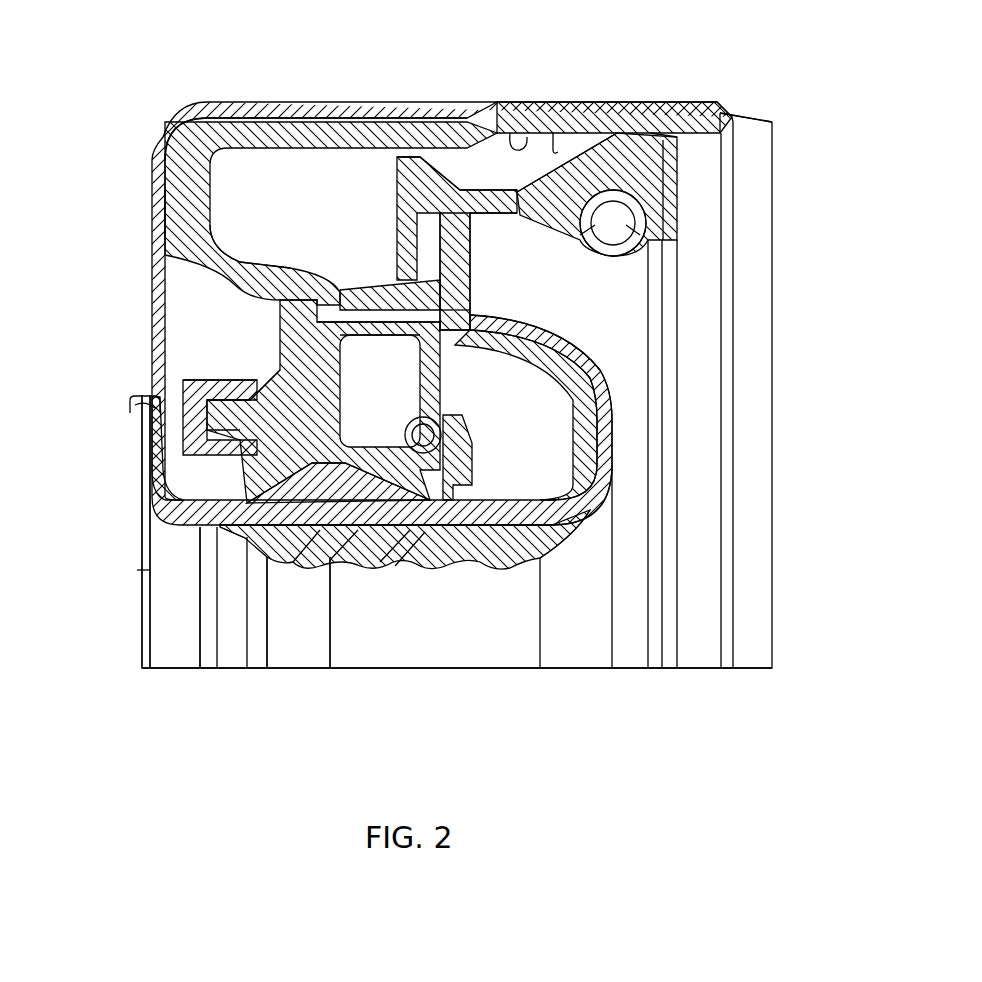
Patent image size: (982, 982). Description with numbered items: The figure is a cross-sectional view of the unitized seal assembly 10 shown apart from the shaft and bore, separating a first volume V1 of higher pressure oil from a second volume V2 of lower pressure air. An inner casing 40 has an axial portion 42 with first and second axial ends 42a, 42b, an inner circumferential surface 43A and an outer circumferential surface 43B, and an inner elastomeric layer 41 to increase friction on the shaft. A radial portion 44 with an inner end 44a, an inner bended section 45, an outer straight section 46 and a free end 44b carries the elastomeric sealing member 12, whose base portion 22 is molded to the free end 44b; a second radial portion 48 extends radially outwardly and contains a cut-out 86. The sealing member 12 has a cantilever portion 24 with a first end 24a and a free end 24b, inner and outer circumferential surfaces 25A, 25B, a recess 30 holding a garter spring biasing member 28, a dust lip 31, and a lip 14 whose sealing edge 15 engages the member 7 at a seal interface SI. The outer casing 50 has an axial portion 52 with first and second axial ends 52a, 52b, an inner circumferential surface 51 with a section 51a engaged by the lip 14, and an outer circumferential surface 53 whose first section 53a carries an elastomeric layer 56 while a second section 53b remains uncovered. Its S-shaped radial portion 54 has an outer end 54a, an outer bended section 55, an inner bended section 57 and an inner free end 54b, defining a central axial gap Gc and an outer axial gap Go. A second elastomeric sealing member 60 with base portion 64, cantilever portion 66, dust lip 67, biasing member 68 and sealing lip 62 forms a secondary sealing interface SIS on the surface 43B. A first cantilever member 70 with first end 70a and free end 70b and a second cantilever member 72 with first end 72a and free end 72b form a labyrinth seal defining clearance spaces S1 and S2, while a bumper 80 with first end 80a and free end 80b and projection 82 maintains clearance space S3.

The seal assembly 10 is at (905, 305).
The elastomeric sealing member 12 is at (700, 258).
The lip 14 is at (655, 135).
The outer circumferential sealing edge 15 is at (635, 120).
The base portion 22 is at (470, 118).
The cantilever portion 24 is at (682, 219).
The first end 24a is at (516, 222).
The free end 24b is at (670, 193).
The inner circumferential surface 25A is at (600, 241).
The outer circumferential surface 25B is at (553, 130).
The biasing member 28 is at (618, 258).
The recess 30 is at (650, 175).
The dust lip 31 is at (400, 165).
The inner casing 40 is at (488, 590).
The inner elastomeric layer 41 is at (363, 560).
The axial portion 42 is at (413, 528).
The first axial end 42a is at (572, 525).
The second axial end 42b is at (185, 530).
The inner circumferential surface 43A is at (305, 560).
The outer circumferential surface 43B is at (510, 500).
The radial portion 44 is at (592, 372).
The inner end 44a is at (570, 507).
The free end 44b is at (415, 205).
The inner bended section 45 is at (586, 418).
The outer straight section 46 is at (448, 262).
The second radial portion 48 is at (138, 476).
The outer casing 50 is at (148, 98).
The inner circumferential surface 51 is at (513, 130).
The section of inner surface 51a is at (690, 120).
The axial portion 52 is at (382, 118).
The first axial end 52a is at (725, 112).
The second axial end 52b is at (220, 112).
The outer circumferential surface 53 is at (425, 100).
The first section 53a is at (345, 108).
The uncovered section 53b is at (595, 102).
The radial portion 54 is at (235, 266).
The outer end 54a is at (185, 128).
The inner free end 54b is at (196, 478).
The outer bended section 55 is at (175, 212).
The elastomeric layer 56 is at (310, 110).
The inner bended section 57 is at (305, 368).
The second elastomeric sealing member 60 is at (360, 542).
The sealing lip 62 is at (405, 530).
The base portion 64 is at (326, 462).
The cantilever portion 66 is at (474, 455).
The dust lip 67 is at (242, 530).
The biasing member 68 is at (460, 440).
The first cantilever member 70 is at (378, 278).
The first end 70a is at (445, 295).
The free end 70b is at (377, 284).
The second cantilever member 72 is at (372, 352).
The first end 72a is at (318, 338).
The free end 72b is at (412, 345).
The bumper 80 is at (188, 375).
The first end 80a is at (230, 378).
The free end 80b is at (187, 437).
The projection 82 is at (122, 398).
The cut-out 86 is at (140, 408).
The member 7 is at (534, 75).
The central axial gap Gc is at (328, 282).
The outer axial gap Go is at (195, 477).
The first clearance space S1 is at (330, 300).
The second clearance space S2 is at (432, 374).
The third clearance space S3 is at (167, 388).
The seal interface SI is at (622, 120).
The secondary sealing interface SIS is at (440, 540).
The first volume V1 is at (752, 382).
The second volume V2 is at (163, 317).